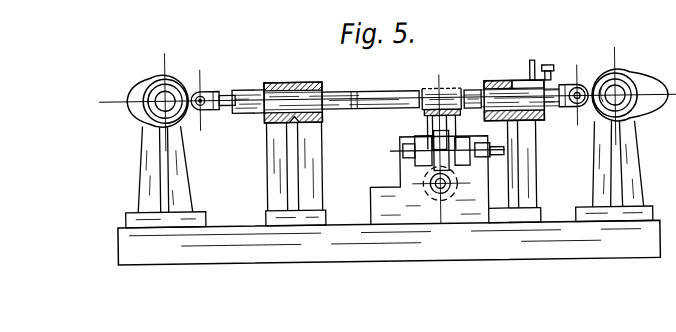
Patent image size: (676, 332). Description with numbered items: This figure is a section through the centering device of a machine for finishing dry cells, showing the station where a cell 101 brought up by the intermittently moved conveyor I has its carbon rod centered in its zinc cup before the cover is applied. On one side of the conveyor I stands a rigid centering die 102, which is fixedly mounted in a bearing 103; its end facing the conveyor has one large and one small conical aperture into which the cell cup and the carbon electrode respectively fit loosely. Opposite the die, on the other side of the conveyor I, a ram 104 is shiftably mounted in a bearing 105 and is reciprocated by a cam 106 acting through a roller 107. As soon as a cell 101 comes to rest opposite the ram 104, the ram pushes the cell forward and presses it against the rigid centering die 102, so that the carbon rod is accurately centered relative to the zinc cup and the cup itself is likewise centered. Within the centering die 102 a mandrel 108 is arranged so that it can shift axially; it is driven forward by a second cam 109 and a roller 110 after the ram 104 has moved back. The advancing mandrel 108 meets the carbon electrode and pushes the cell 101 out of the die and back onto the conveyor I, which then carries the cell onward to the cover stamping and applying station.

The cell 101 is at (450, 89).
The centering die 102 is at (241, 87).
The bearing 103 is at (315, 69).
The ram 104 is at (474, 92).
The bearing 105 is at (527, 146).
The cam 106 is at (640, 88).
The roller 107 is at (580, 89).
The mandrel 108 is at (352, 108).
The cam 109 is at (153, 88).
The roller 110 is at (204, 109).
The conveyor I is at (401, 158).